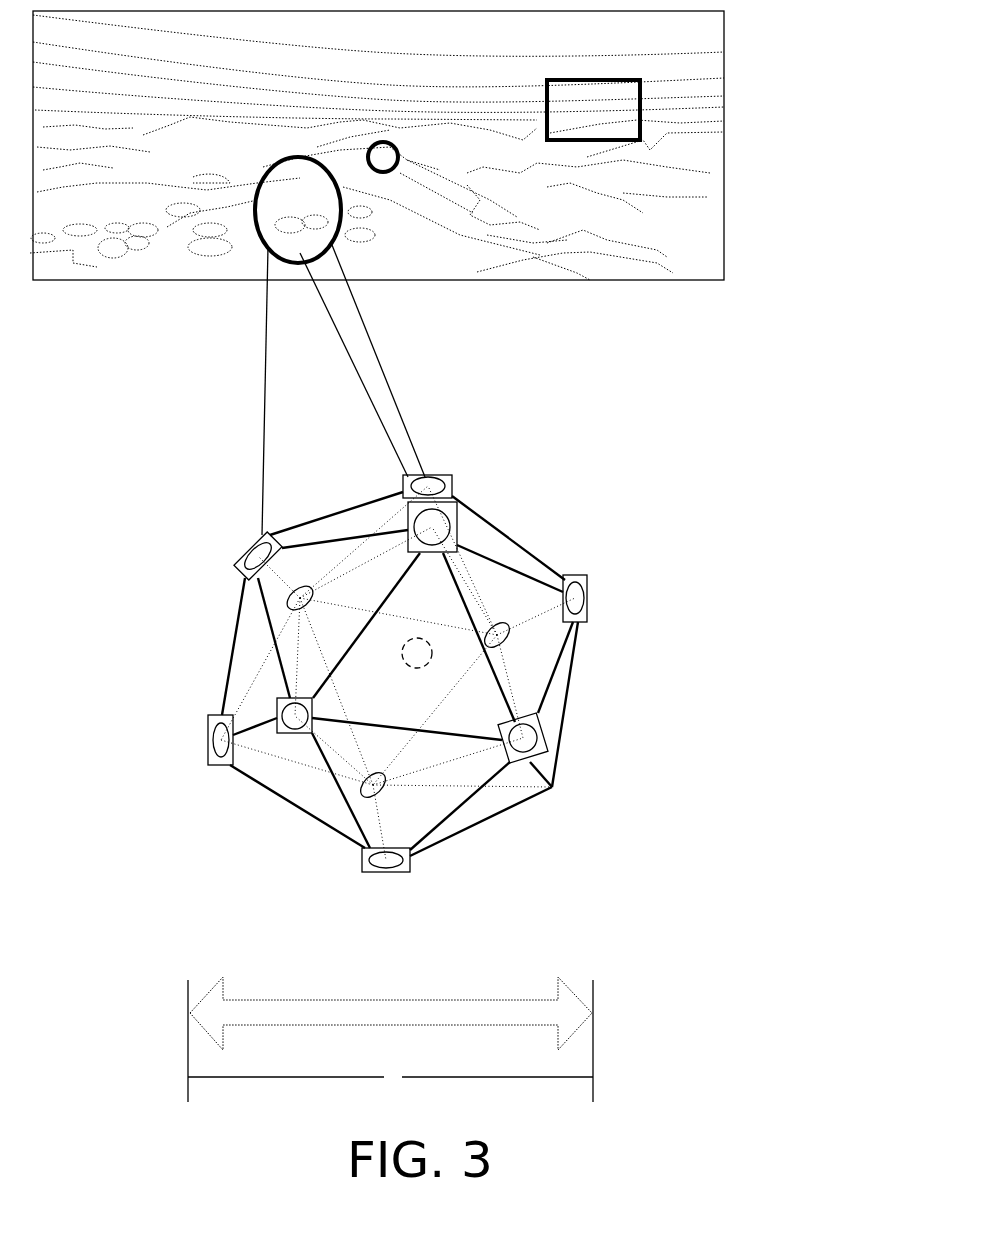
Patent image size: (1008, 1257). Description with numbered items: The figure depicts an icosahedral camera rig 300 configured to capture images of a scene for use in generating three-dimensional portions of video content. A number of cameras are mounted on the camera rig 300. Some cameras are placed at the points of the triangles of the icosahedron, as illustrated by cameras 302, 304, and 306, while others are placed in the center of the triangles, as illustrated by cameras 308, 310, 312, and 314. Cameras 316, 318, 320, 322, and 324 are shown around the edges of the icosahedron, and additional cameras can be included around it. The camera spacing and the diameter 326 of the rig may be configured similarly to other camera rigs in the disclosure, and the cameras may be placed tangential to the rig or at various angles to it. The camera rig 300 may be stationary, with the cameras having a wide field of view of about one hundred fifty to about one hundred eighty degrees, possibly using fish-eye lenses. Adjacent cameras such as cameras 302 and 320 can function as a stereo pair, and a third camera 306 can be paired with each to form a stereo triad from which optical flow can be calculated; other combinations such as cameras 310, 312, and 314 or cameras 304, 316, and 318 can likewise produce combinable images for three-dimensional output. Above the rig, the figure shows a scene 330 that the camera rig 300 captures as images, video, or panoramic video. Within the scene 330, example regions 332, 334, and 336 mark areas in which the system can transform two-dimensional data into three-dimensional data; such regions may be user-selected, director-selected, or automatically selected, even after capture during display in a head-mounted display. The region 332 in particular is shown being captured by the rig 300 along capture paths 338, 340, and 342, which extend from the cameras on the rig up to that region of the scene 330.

The icosahedral camera rig 300 is at (640, 503).
The camera 302 is at (287, 733).
The camera 304 is at (410, 522).
The camera 306 is at (547, 757).
The camera 308 is at (435, 660).
The camera 310 is at (360, 797).
The camera 312 is at (292, 610).
The camera 314 is at (512, 625).
The camera 316 is at (405, 478).
The camera 318 is at (587, 596).
The camera 320 is at (362, 870).
The camera 322 is at (208, 742).
The camera 324 is at (250, 556).
The diameter 326 is at (300, 1077).
The scene 330 is at (433, 43).
The region 332 is at (265, 232).
The region 334 is at (393, 173).
The region 336 is at (640, 122).
The capture path 338 is at (263, 407).
The capture path 340 is at (367, 393).
The capture path 342 is at (383, 368).